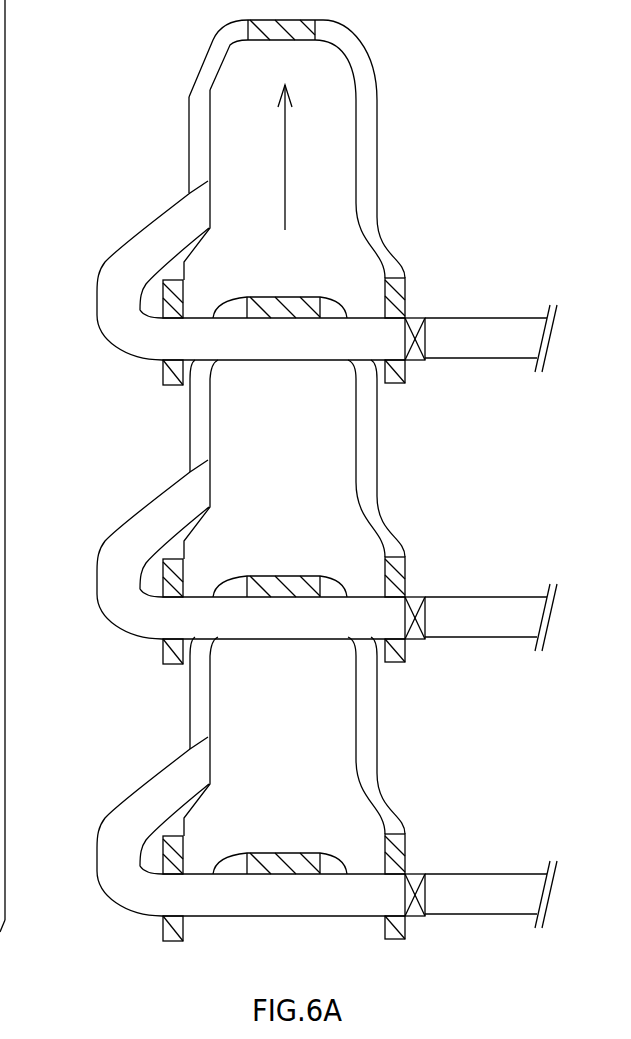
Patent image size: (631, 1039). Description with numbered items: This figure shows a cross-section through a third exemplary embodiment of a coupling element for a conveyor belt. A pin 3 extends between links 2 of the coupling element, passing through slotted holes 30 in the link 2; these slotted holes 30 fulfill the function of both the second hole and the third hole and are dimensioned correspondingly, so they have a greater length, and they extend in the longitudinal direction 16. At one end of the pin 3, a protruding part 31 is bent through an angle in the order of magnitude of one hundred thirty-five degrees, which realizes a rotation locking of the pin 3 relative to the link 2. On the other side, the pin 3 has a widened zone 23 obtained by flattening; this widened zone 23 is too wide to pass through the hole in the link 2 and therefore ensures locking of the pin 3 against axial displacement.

The link 2 is at (398, 288).
The pin 3 is at (490, 335).
The longitudinal direction 16 is at (297, 118).
The widened zone 23 is at (418, 362).
The slotted holes 30 is at (188, 162).
The protruding part 31 is at (127, 322).